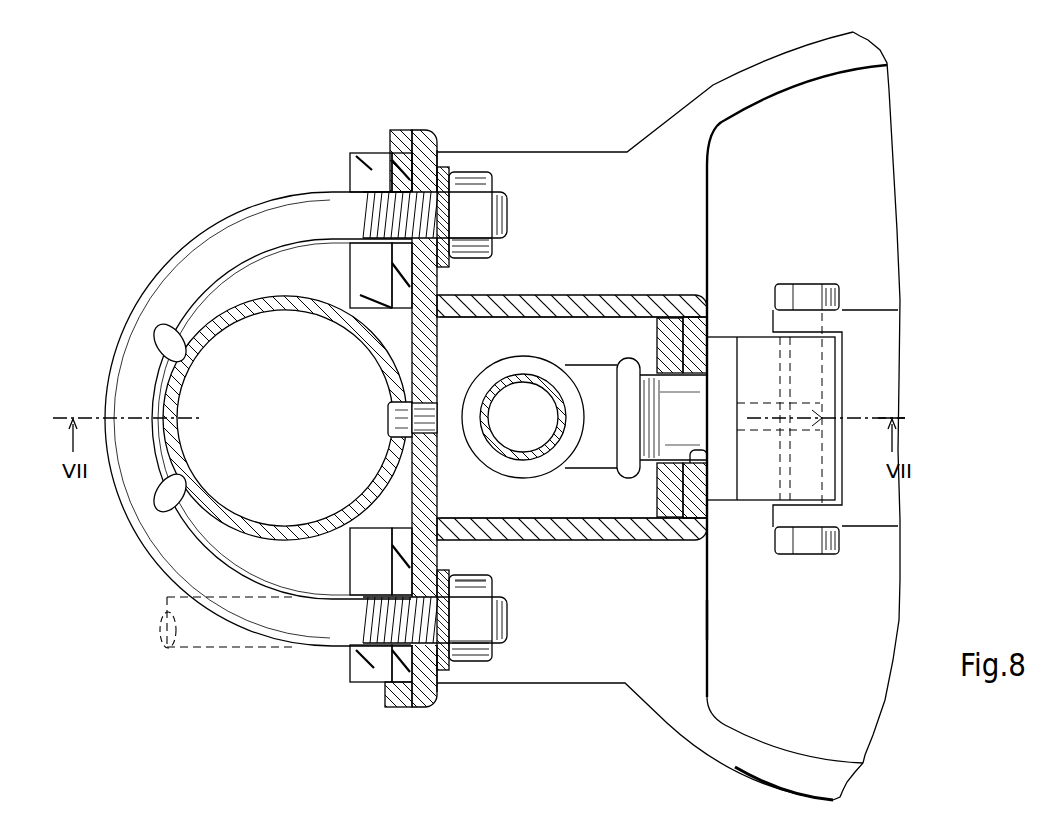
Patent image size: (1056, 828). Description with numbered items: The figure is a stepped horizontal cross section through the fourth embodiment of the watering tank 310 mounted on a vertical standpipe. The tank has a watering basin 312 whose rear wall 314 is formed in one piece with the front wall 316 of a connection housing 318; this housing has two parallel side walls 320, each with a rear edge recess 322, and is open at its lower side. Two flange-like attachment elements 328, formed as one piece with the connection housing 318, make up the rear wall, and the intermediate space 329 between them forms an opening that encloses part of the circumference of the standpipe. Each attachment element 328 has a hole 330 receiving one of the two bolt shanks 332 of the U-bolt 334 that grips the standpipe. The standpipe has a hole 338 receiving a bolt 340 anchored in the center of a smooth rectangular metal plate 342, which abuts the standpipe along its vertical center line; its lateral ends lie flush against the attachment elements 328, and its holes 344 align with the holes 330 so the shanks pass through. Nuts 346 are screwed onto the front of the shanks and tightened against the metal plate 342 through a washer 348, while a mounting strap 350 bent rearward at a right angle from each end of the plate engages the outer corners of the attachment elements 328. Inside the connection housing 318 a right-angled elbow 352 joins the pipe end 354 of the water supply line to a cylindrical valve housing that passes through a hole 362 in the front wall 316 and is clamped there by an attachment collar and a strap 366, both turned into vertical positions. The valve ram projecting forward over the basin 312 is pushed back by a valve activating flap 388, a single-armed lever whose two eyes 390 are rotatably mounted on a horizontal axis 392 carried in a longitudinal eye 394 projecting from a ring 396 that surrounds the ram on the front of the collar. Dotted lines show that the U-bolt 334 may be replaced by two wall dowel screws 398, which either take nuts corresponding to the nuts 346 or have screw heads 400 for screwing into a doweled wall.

The watering tank 310 is at (664, 734).
The watering basin 312 is at (752, 760).
The rear wall 314 is at (675, 615).
The front wall 316 is at (707, 311).
The connection housing 318 is at (623, 294).
The side walls 320 is at (542, 297).
The rear edge recess 322 is at (481, 303).
The attachment elements 328 is at (372, 163).
The intermediate space 329 is at (402, 348).
The hole 330 is at (390, 240).
The bolt shanks 332 is at (505, 213).
The U-bolt 334 is at (146, 568).
The hole 338 is at (388, 404).
The bolt 340 is at (398, 432).
The metal plate 342 is at (446, 496).
The holes 344 is at (440, 160).
The nuts 346 is at (489, 243).
The washer 348 is at (443, 255).
The mounting strap 350 is at (408, 130).
The right-angled elbow 352 is at (598, 370).
The pipe end 354 is at (530, 380).
The hole 362 is at (717, 462).
The strap 366 is at (667, 326).
The valve activating flap 388 is at (872, 540).
The eyes 390 is at (797, 306).
The horizontal axis 392 is at (812, 376).
The longitudinal eye 394 is at (826, 453).
The ring 396 is at (727, 346).
The wall dowel screws 398 is at (186, 650).
The screw heads 400 is at (482, 583).